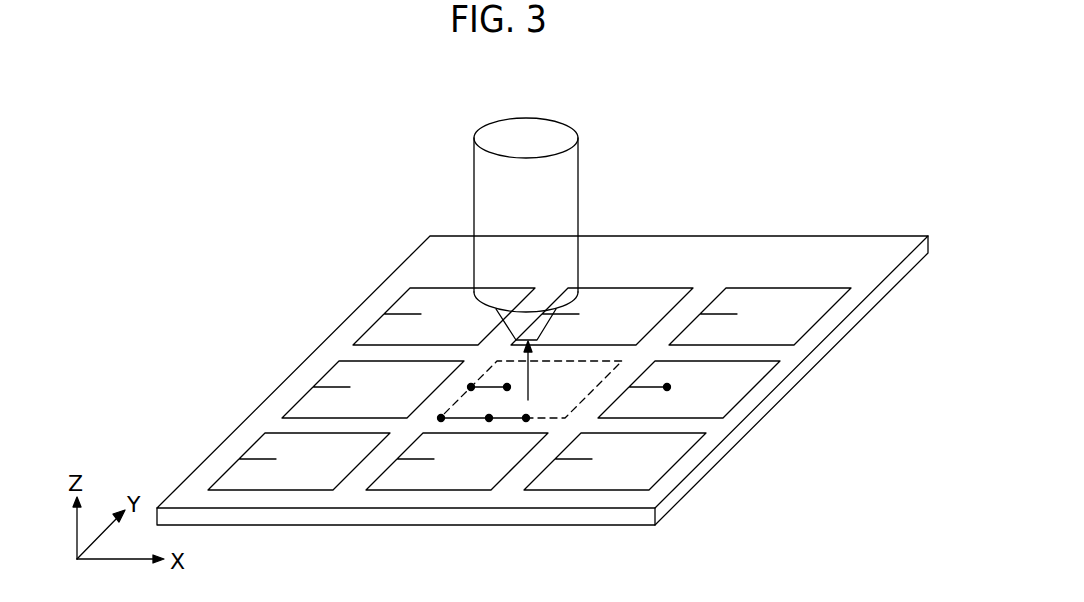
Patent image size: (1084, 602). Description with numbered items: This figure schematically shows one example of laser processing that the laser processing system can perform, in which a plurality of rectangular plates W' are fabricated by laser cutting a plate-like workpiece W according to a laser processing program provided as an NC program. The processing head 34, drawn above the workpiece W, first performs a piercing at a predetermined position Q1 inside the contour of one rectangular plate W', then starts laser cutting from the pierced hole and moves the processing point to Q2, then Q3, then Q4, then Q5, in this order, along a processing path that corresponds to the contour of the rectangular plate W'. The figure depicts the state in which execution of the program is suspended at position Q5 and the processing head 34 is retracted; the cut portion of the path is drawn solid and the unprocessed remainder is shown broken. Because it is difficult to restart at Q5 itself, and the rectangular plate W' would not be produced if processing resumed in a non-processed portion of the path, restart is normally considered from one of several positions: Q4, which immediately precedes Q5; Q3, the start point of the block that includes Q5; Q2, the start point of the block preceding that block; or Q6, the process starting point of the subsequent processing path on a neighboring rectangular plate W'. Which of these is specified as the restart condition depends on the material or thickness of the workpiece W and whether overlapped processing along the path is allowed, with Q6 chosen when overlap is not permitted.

The processing head 34 is at (576, 229).
The workpiece W is at (542, 340).
The rectangular plate W' is at (781, 343).
The piercing position Q1 is at (443, 306).
The processing point Q2 is at (390, 325).
The processing point Q3 is at (430, 497).
The processing point Q4 is at (477, 497).
The suspension position Q5 is at (524, 497).
The process starting point Q6 is at (756, 438).